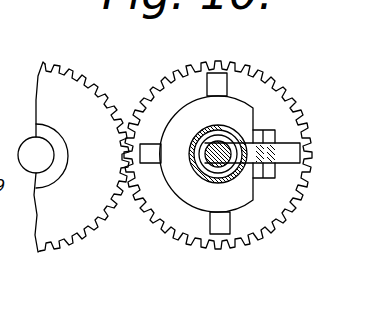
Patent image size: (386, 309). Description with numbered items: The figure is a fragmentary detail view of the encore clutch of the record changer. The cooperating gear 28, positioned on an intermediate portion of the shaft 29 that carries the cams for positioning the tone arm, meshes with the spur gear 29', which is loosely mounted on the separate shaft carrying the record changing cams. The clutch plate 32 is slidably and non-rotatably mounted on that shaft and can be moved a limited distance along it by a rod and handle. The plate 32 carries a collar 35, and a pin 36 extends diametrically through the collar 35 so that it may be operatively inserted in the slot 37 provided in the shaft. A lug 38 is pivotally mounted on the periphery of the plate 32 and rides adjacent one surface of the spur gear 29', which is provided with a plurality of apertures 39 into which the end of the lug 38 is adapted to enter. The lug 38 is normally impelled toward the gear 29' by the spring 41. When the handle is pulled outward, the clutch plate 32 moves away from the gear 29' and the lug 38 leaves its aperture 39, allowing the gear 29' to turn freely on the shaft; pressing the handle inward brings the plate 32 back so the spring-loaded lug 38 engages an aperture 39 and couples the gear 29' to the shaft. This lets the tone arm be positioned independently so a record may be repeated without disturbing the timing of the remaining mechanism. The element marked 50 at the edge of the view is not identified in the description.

The cooperating gear 28 is at (61, 80).
The shaft 29 is at (27, 134).
The spur gear 29' is at (239, 153).
The clutch plate 32 is at (195, 112).
The collar 35 is at (196, 144).
The pin 36 is at (249, 139).
The slot 37 is at (231, 166).
The lug 38 is at (313, 148).
The apertures 39 is at (218, 80).
The spring 41 is at (262, 179).
The frame 50 is at (6, 205).